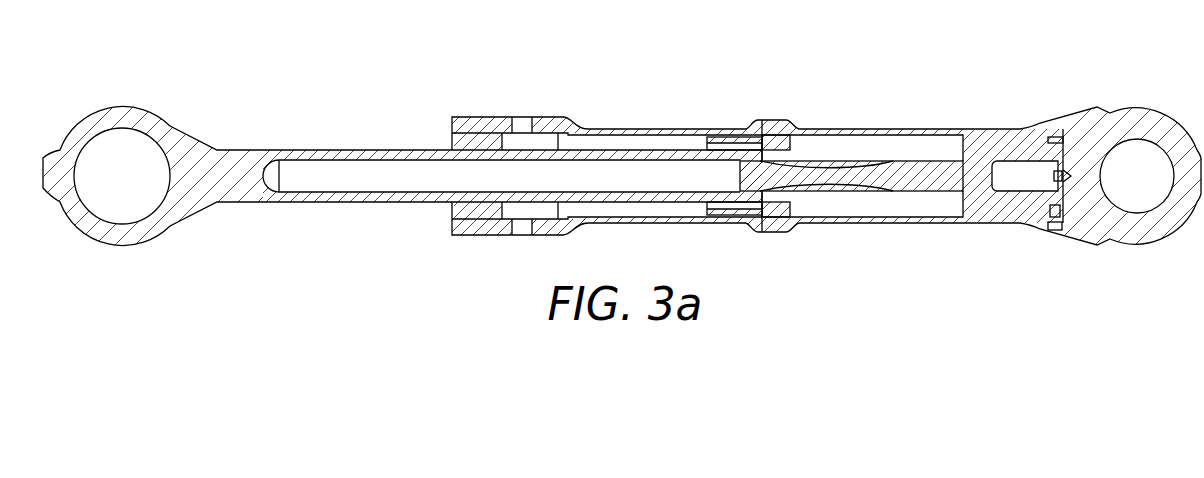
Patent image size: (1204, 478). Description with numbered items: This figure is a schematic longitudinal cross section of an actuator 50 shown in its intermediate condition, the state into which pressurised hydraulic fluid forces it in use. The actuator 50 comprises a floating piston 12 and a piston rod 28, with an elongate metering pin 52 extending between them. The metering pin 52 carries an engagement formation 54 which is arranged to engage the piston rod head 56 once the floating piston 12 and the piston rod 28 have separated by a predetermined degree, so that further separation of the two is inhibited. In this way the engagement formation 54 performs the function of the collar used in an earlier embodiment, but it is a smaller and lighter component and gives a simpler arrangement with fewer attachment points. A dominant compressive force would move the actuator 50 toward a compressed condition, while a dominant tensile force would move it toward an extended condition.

The actuator 50 is at (961, 77).
The floating piston 12 is at (977, 205).
The piston rod 28 is at (623, 201).
The elongate metering pin 52 is at (916, 153).
The engagement formation 54 is at (752, 208).
The piston rod head 56 is at (773, 146).